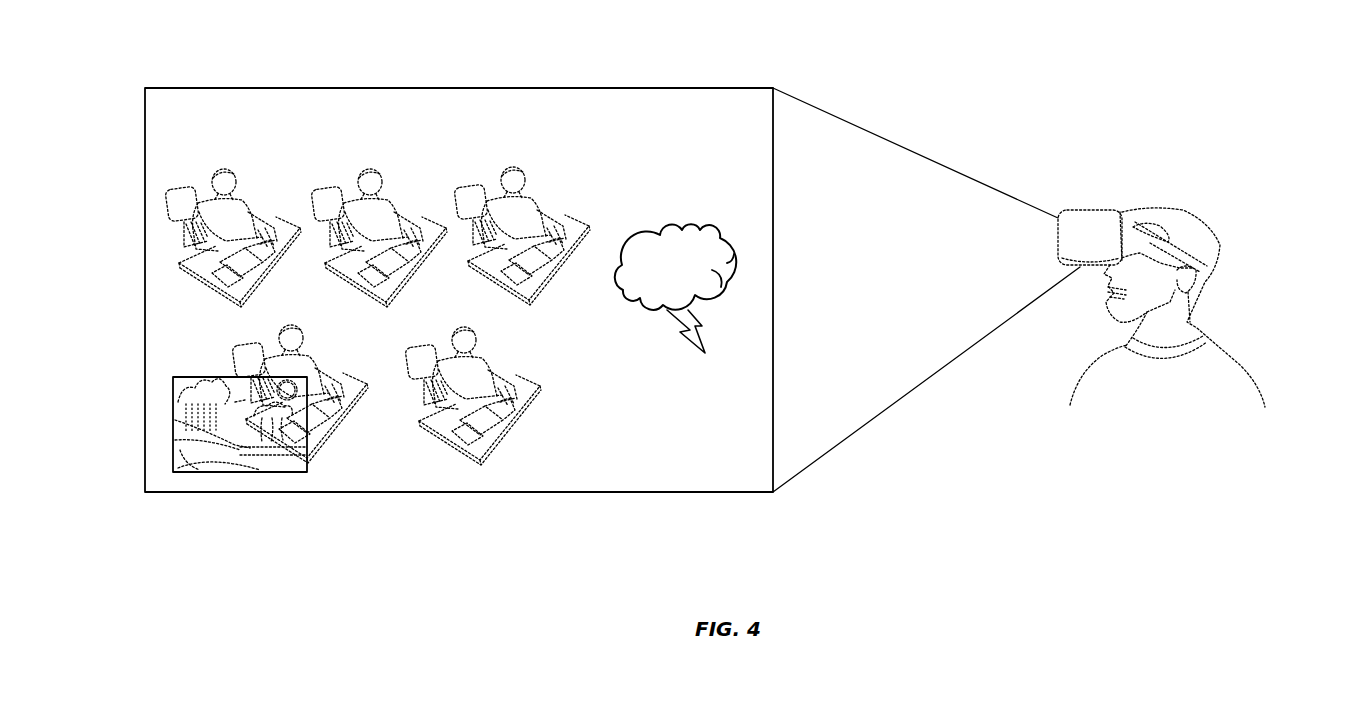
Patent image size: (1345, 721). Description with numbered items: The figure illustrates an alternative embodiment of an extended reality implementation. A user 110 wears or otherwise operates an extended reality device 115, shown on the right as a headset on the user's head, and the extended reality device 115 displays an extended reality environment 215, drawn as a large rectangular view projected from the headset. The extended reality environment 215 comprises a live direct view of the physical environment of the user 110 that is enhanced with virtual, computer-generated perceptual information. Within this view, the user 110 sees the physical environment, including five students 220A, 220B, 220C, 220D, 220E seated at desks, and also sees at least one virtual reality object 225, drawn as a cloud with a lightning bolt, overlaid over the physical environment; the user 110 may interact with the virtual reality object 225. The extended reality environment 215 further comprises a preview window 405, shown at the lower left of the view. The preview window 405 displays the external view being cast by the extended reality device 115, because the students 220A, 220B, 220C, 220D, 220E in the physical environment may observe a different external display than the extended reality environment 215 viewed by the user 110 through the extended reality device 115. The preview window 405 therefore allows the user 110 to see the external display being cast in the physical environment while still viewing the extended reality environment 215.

The extended reality environment 215 is at (637, 88).
The student 220A is at (550, 193).
The student 220B is at (393, 192).
The student 220C is at (243, 192).
The student 220D is at (495, 367).
The student 220E is at (313, 364).
The virtual reality object 225 is at (673, 226).
The preview window 405 is at (175, 430).
The extended reality device 115 is at (1088, 222).
The user 110 is at (1237, 358).